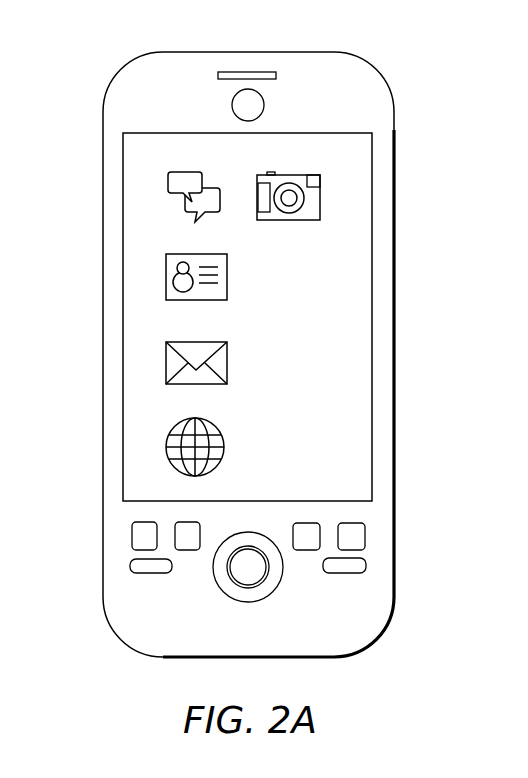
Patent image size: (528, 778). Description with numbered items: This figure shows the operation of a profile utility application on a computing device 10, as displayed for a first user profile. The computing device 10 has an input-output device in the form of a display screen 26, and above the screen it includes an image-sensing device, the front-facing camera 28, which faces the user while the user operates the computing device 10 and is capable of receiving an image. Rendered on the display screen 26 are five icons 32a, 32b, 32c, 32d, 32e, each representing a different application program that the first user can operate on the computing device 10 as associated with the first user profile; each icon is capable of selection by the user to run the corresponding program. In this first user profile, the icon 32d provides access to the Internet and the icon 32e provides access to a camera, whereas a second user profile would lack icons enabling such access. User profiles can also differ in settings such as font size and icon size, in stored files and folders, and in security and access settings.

The computing device 10 is at (409, 50).
The display screen 26 is at (296, 133).
The front-facing camera 28 is at (232, 105).
The icon 32a is at (190, 172).
The icon 32b is at (199, 254).
The icon 32c is at (199, 342).
The icon 32d is at (199, 418).
The icon 32e is at (287, 175).